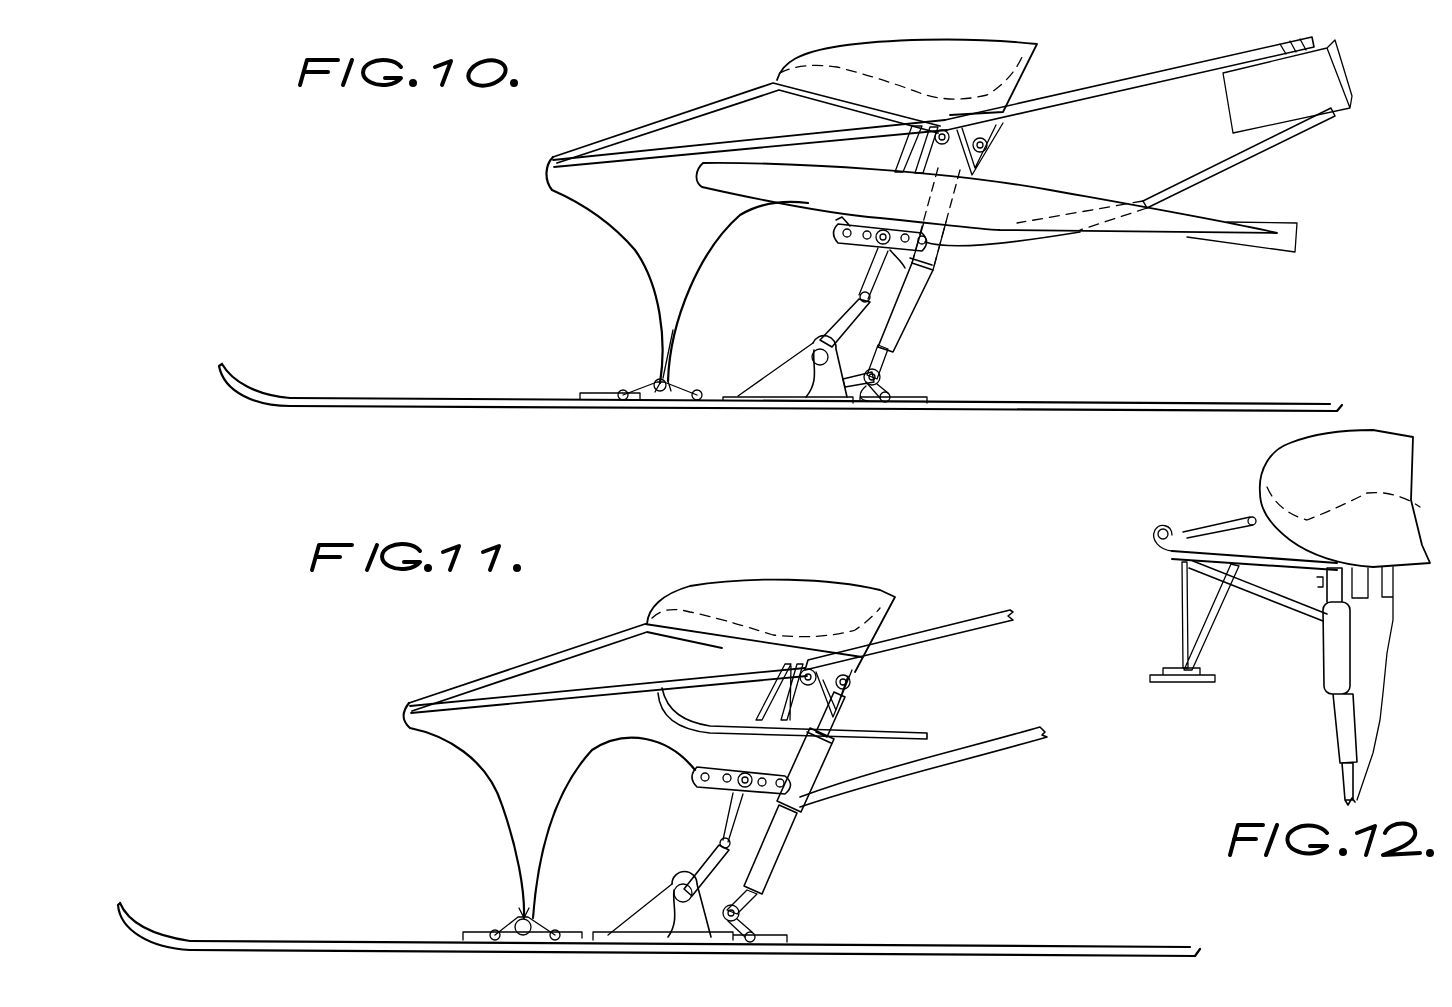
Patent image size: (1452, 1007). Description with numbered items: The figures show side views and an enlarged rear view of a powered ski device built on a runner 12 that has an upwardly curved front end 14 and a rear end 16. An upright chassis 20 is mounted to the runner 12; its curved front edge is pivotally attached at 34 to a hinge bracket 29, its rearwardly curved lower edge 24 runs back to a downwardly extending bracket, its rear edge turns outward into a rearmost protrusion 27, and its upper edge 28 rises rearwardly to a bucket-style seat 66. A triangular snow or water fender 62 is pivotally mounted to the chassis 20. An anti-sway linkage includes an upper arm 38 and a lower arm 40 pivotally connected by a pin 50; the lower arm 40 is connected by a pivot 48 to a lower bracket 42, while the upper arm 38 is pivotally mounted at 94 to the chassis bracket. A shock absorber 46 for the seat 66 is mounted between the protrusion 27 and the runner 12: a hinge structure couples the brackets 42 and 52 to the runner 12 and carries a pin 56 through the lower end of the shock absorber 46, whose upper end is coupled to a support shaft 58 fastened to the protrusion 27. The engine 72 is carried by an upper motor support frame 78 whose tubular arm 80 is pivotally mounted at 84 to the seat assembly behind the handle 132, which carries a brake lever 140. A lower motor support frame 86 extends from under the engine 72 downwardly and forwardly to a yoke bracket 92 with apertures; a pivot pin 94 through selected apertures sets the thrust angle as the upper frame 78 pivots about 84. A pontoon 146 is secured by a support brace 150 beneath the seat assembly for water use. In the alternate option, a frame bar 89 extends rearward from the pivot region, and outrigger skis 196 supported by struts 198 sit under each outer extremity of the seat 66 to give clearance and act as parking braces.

In FIG. 10, the runner 12 is at (387, 398).
In FIG. 11, the runner 12 is at (307, 941).
In FIG. 10, the front end 14 is at (223, 364).
In FIG. 11, the front end 14 is at (123, 900).
In FIG. 10, the rear end 16 is at (1342, 404).
In FIG. 11, the rear end 16 is at (1188, 952).
In FIG. 10, the chassis 20 is at (636, 228).
In FIG. 11, the chassis 20 is at (487, 760).
In FIG. 10, the lower edge 24 is at (733, 223).
In FIG. 11, the lower edge 24 is at (590, 762).
In FIG. 11, the protrusion 27 is at (855, 687).
In FIG. 11, the upper edge 28 is at (557, 647).
In FIG. 10, the hinge bracket 29 is at (641, 390).
In FIG. 11, the pivotal attachment 34 is at (520, 913).
In FIG. 11, the upper arm 38 is at (733, 842).
In FIG. 11, the lower arm 40 is at (703, 867).
In FIG. 11, the lower bracket 42 is at (647, 927).
In FIG. 10, the shock absorber 46 is at (920, 300).
In FIG. 11, the shock absorber 46 is at (783, 837).
In FIG. 12, the shock absorber 46 is at (1327, 680).
In FIG. 10, the pivot 48 is at (815, 378).
In FIG. 10, the pin 50 is at (853, 293).
In FIG. 10, the bracket 52 is at (881, 382).
In FIG. 10, the pin 56 is at (860, 390).
In FIG. 10, the support shaft 58 is at (988, 147).
In FIG. 10, the fender 62 is at (640, 140).
In FIG. 11, the fender 62 is at (585, 672).
In FIG. 12, the fender 62 is at (1288, 588).
In FIG. 10, the bucket-style seat 66 is at (1037, 63).
In FIG. 11, the bucket-style seat 66 is at (843, 590).
In FIG. 12, the bucket-style seat 66 is at (1355, 450).
In FIG. 10, the engine 72 is at (1333, 117).
In FIG. 10, the upper motor support frame 78 is at (700, 108).
In FIG. 10, the tubular arm 80 is at (1100, 90).
In FIG. 10, the pivot 84 is at (943, 129).
In FIG. 11, the pivot 84 is at (806, 667).
In FIG. 10, the lower motor support frame 86 is at (1250, 167).
In FIG. 11, the lower motor support frame 86 is at (907, 777).
In FIG. 11, the rear frame bar 89 is at (909, 623).
In FIG. 10, the bracket 92 is at (847, 247).
In FIG. 11, the bracket 92 is at (693, 787).
In FIG. 10, the pivot pin 94 is at (912, 262).
In FIG. 11, the pivot pin 94 is at (750, 773).
In FIG. 12, the handle 132 is at (1173, 533).
In FIG. 12, the brake lever 140 is at (1220, 520).
In FIG. 10, the pontoon 146 is at (1150, 236).
In FIG. 10, the support brace 150 is at (907, 153).
In FIG. 11, the outrigger ski 196 is at (897, 727).
In FIG. 12, the outrigger ski 196 is at (1207, 682).
In FIG. 11, the strut 198 is at (790, 692).
In FIG. 12, the strut 198 is at (1185, 602).